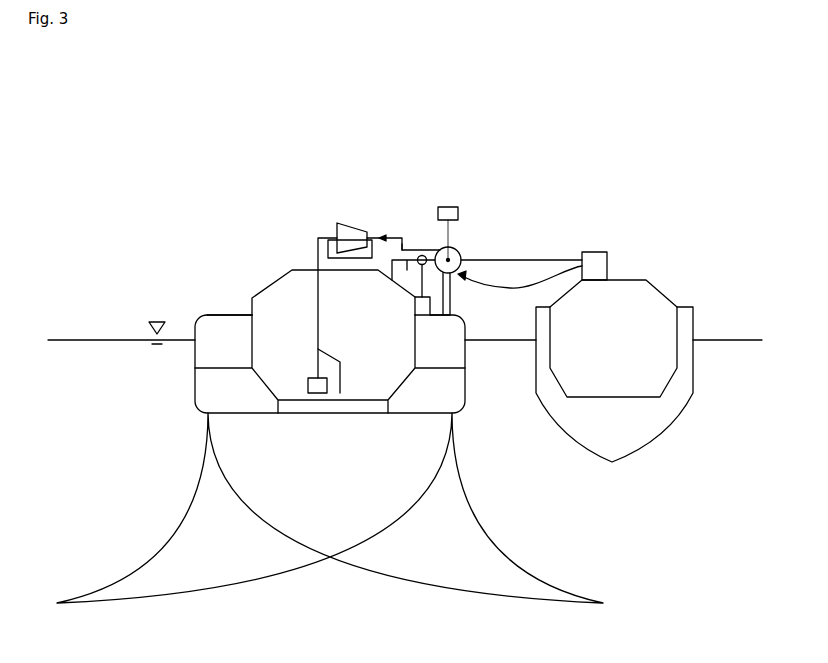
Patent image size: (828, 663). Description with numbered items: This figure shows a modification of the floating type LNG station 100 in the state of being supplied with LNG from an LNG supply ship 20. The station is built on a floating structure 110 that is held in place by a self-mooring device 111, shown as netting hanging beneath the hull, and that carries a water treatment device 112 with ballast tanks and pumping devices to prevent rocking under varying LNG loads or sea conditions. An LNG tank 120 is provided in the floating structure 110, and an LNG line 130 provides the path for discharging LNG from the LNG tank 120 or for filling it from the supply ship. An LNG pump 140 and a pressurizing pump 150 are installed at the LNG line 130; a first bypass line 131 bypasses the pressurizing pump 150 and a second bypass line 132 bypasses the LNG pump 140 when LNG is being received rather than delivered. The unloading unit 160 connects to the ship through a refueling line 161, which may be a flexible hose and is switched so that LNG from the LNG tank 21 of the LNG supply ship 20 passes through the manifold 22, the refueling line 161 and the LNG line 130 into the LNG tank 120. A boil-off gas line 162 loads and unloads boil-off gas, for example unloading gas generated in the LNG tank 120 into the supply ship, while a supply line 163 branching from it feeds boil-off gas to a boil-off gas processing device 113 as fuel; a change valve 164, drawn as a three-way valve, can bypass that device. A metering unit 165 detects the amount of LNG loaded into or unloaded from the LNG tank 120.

The floating type LNG station 100 is at (242, 150).
The floating structure 110 is at (195, 388).
The self-mooring device 111 is at (173, 525).
The water treatment device 112 is at (212, 315).
The boil-off gas processing device 113 is at (425, 317).
The LNG tank 120 is at (292, 283).
The LNG line 130 is at (318, 252).
The first bypass line 131 is at (348, 260).
The second bypass line 132 is at (343, 368).
The LNG pump 140 is at (307, 380).
The pressurizing pump 150 is at (350, 226).
The unloading unit 160 is at (457, 252).
The refueling line 161 is at (533, 282).
The boil-off gas line 162 is at (505, 259).
The supply line 163 is at (426, 266).
The change valve 164 is at (410, 250).
The metering unit 165 is at (449, 206).
The LNG supply ship 20 is at (660, 277).
The LNG tank 21 is at (663, 297).
The manifold 22 is at (596, 251).